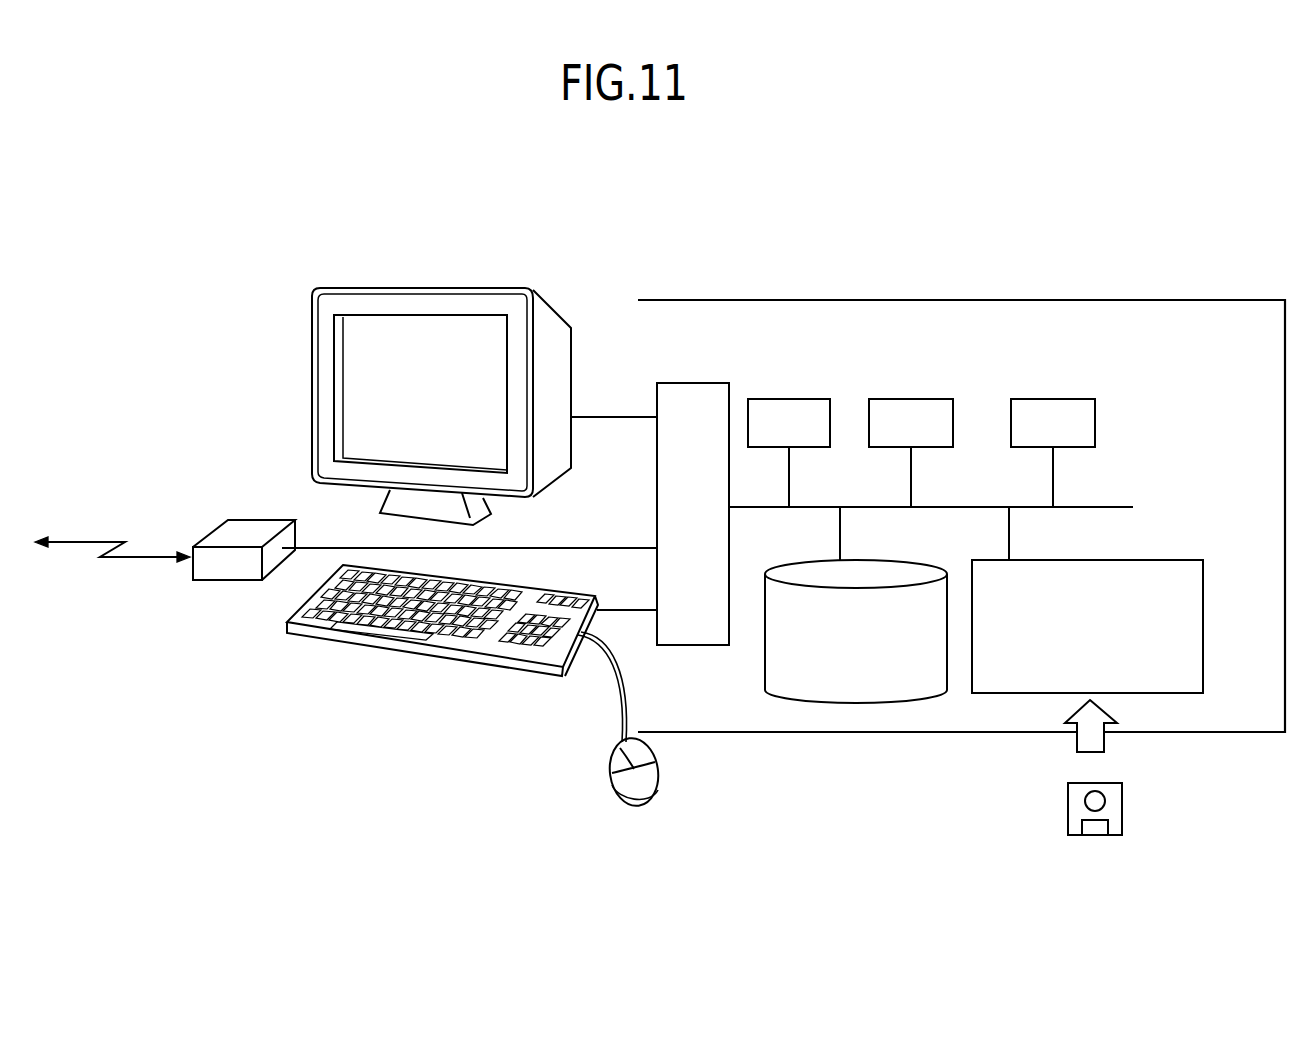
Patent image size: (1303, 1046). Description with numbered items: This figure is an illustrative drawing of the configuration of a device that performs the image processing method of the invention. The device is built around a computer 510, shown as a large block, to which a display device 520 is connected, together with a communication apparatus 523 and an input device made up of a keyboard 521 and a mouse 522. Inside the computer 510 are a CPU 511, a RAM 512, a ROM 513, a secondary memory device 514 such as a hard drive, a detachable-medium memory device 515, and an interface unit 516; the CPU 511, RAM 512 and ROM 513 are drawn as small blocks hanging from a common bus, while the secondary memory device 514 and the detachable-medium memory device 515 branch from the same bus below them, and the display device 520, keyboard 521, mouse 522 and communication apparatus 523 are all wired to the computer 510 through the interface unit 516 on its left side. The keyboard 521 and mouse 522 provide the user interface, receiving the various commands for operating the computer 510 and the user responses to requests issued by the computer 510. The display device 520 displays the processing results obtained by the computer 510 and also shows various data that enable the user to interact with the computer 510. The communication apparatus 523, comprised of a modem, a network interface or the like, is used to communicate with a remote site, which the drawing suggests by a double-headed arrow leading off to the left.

The computer 510 is at (1168, 298).
The CPU 511 is at (756, 399).
The RAM 512 is at (877, 399).
The ROM 513 is at (1020, 399).
The secondary memory device 514 is at (764, 662).
The detachable-medium memory device 515 is at (1140, 558).
The interface unit 516 is at (670, 383).
The display device 520 is at (469, 287).
The keyboard 521 is at (447, 658).
The mouse 522 is at (619, 805).
The communication apparatus 523 is at (248, 520).